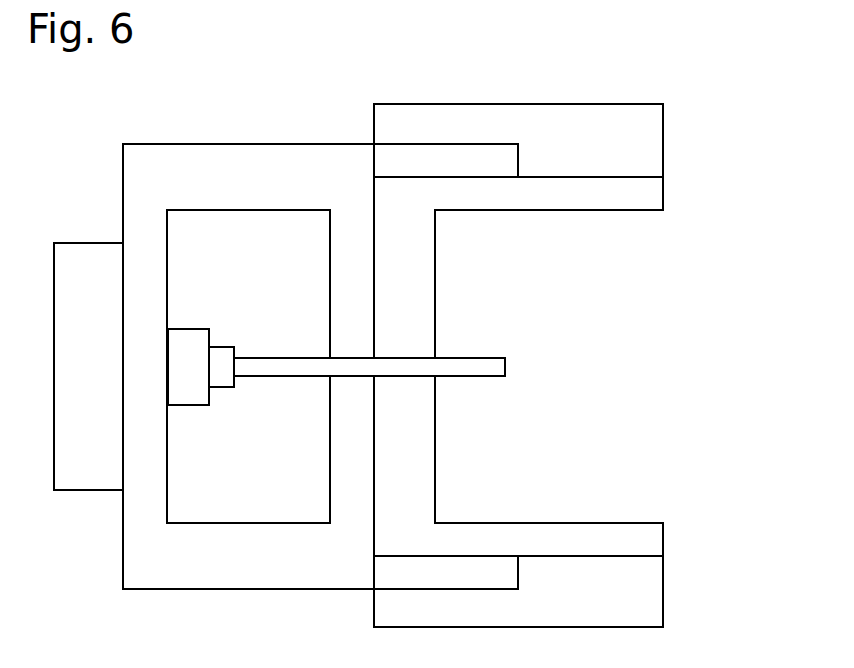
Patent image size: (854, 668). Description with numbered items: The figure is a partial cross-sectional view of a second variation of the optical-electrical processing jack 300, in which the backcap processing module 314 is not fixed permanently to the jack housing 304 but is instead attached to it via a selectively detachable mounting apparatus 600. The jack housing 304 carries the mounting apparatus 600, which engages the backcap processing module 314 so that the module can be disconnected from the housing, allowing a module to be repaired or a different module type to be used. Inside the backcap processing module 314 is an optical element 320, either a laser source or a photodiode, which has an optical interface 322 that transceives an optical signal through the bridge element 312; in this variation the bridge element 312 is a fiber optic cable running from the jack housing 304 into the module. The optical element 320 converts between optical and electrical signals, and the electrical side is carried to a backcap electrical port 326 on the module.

The mounting apparatus assembly 300 is at (667, 84).
The jack housing 304 is at (623, 212).
The bridge element 312 is at (395, 357).
The backcap processing module 314 is at (258, 144).
The optical element 320 is at (196, 329).
The optical interface 322 is at (222, 388).
The backcap electrical port 326 is at (88, 366).
The mounting apparatus 600 is at (518, 365).